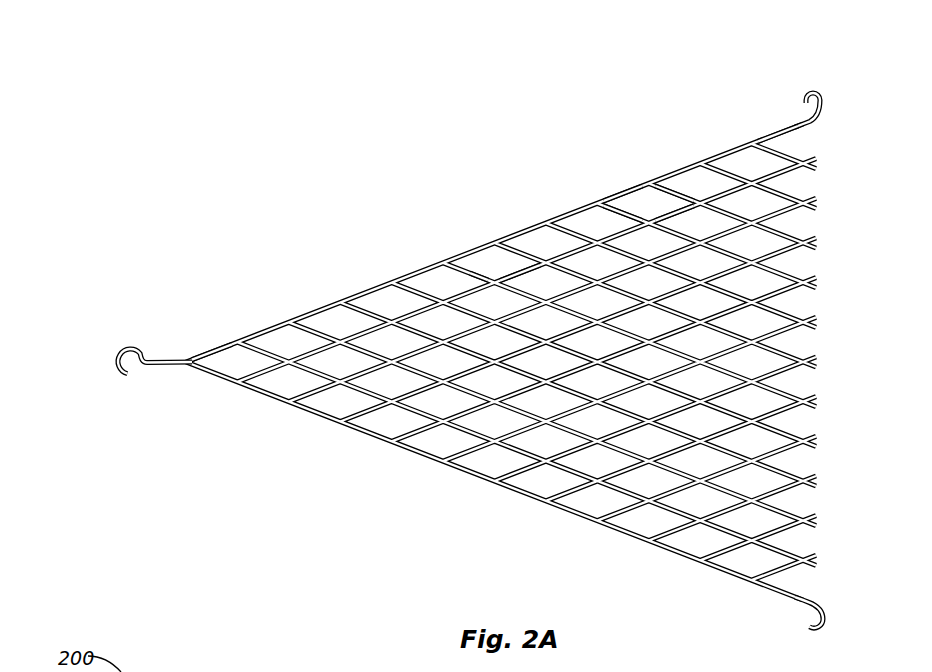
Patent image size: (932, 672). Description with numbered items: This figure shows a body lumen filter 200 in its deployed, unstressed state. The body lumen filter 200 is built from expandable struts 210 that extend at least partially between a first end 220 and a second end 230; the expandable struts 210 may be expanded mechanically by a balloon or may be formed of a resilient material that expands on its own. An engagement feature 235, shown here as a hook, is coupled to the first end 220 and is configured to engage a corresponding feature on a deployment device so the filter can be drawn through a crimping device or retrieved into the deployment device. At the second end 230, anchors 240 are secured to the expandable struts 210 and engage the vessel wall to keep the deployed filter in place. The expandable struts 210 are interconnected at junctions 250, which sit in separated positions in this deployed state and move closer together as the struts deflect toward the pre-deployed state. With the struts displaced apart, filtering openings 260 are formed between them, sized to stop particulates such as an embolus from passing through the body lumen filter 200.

The body lumen filter 200 is at (479, 330).
The expandable struts 210 is at (520, 275).
The first end 220 is at (199, 331).
The second end 230 is at (767, 106).
The engagement feature 235 is at (118, 356).
The anchor 240 is at (824, 108).
The junctions 250 is at (493, 276).
The filtering openings 260 is at (645, 211).